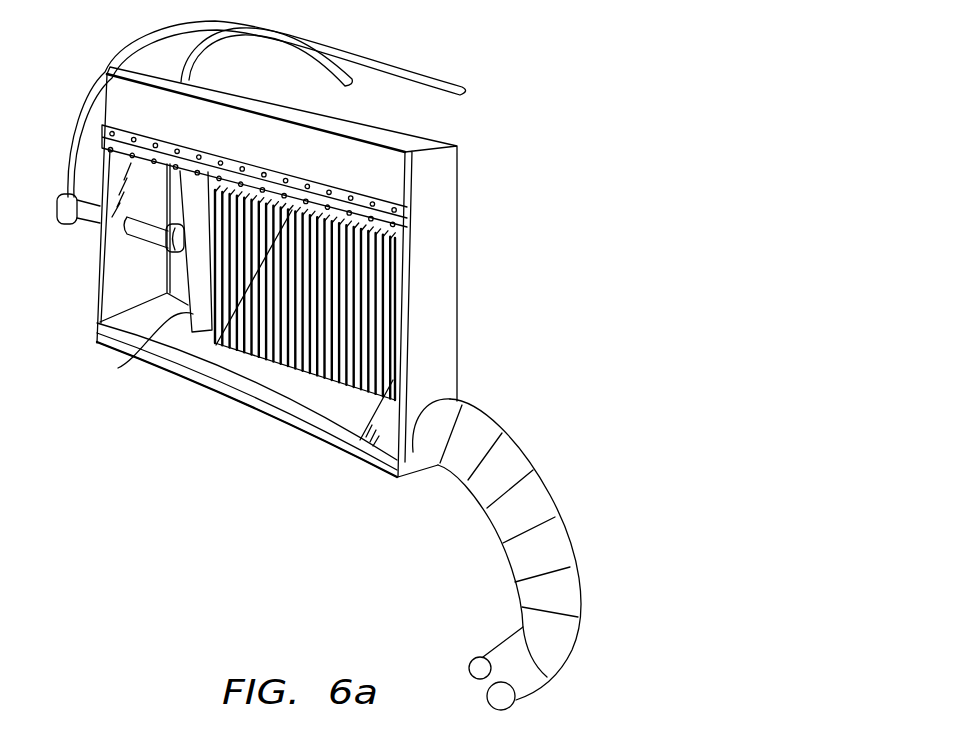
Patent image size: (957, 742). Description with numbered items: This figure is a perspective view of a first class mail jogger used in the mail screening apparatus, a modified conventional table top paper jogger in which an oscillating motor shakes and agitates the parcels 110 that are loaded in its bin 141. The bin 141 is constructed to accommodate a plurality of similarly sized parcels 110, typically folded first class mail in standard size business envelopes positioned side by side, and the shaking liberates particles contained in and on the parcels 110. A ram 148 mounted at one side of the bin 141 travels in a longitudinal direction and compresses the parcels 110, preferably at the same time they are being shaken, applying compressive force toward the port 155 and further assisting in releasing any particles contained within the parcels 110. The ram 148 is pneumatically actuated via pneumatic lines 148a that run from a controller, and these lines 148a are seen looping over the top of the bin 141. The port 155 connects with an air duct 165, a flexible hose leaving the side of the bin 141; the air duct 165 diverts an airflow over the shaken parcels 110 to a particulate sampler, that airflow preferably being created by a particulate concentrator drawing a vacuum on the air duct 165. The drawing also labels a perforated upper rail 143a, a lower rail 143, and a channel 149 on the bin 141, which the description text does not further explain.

The bin 141 is at (524, 94).
The perforated top rail 143a is at (412, 223).
The bottom rail 143 is at (350, 420).
The parcels 110 is at (287, 360).
The ram 148 is at (150, 237).
The pneumatic lines 148a is at (377, 60).
The channel 149 is at (131, 349).
The port 155 is at (444, 393).
The air duct 165 is at (528, 470).